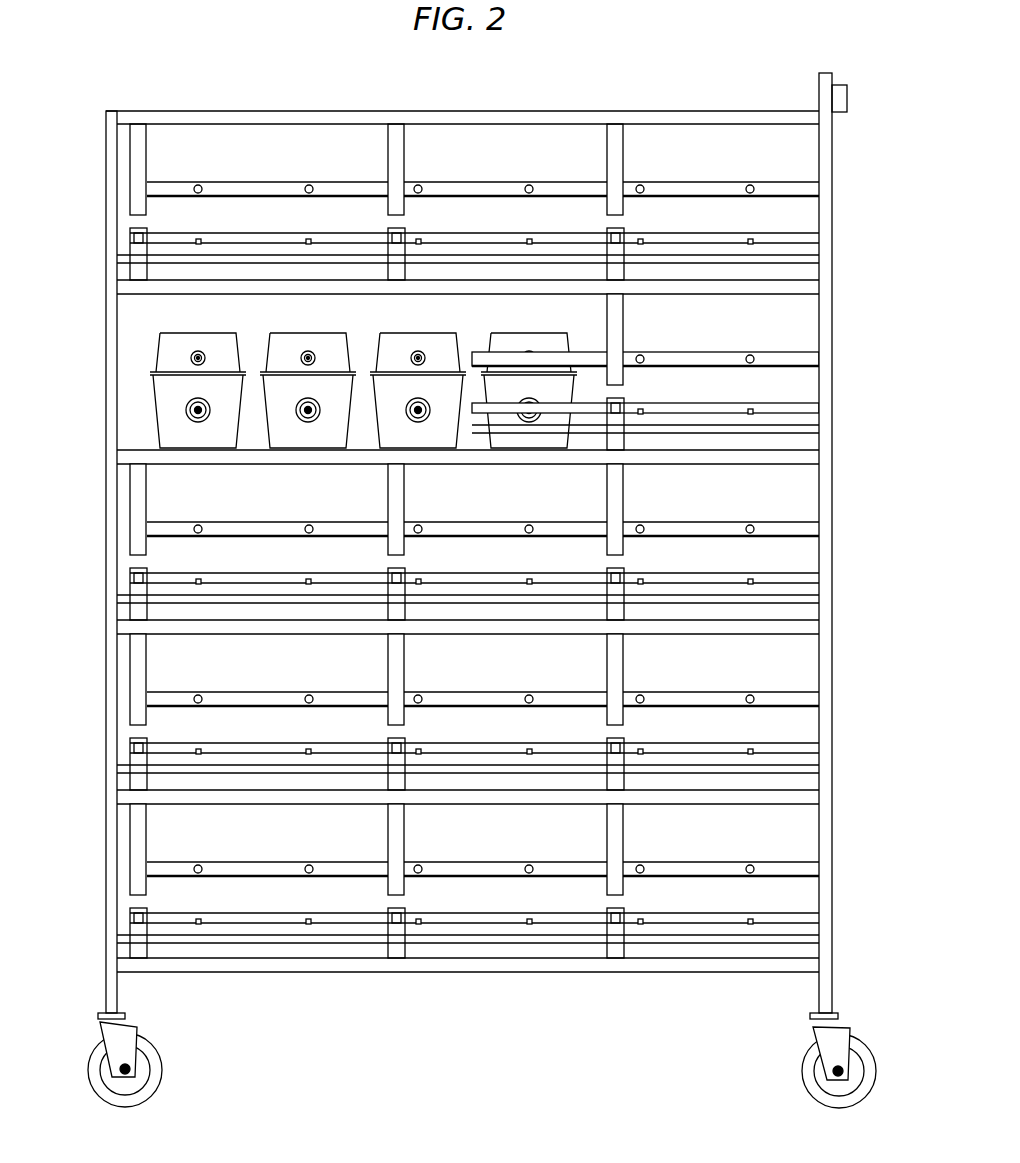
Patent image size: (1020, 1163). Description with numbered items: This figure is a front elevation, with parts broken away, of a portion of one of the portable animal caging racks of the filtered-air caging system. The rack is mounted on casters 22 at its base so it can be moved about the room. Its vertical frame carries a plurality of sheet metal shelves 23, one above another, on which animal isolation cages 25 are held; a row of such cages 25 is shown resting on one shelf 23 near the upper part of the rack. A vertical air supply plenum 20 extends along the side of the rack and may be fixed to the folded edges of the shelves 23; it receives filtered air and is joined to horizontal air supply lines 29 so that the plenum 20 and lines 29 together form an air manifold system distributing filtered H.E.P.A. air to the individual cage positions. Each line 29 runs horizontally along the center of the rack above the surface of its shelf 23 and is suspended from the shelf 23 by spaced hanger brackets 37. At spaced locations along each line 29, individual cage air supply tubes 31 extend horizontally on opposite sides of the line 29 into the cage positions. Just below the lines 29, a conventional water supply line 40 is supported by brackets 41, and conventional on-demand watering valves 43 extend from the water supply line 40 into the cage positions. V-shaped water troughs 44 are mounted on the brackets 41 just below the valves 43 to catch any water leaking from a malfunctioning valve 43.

The vertical air supply plenum 20 is at (823, 90).
The casters 22 is at (158, 1077).
The sheet metal shelves 23 is at (226, 285).
The animal isolation cages 25 is at (175, 402).
The horizontal air supply lines 29 is at (474, 182).
The individual cage air supply tubes 31 is at (752, 185).
The hanger brackets 37 is at (146, 150).
The water supply line 40 is at (231, 234).
The brackets 41 is at (612, 271).
The on-demand watering valves 43 is at (308, 238).
The V-shaped water troughs 44 is at (814, 250).